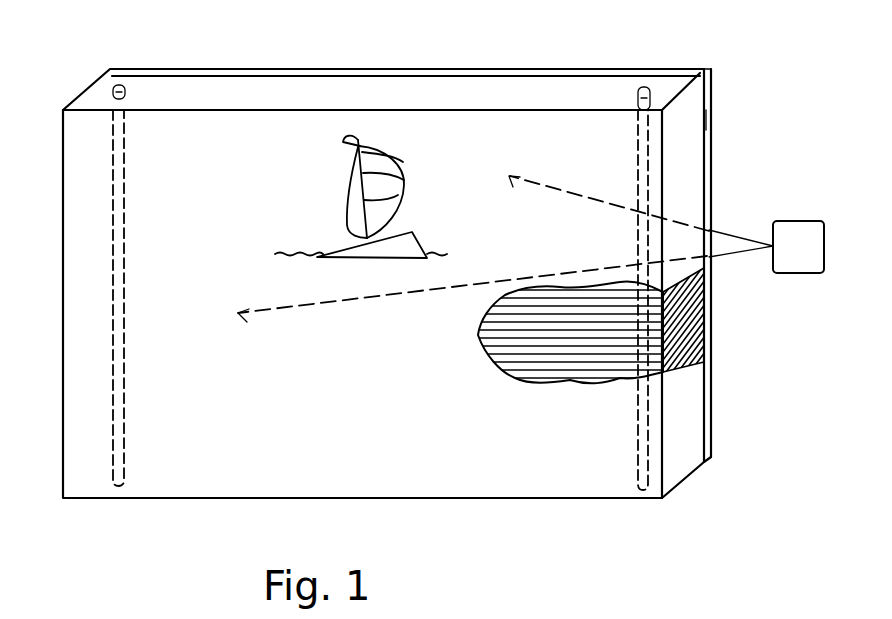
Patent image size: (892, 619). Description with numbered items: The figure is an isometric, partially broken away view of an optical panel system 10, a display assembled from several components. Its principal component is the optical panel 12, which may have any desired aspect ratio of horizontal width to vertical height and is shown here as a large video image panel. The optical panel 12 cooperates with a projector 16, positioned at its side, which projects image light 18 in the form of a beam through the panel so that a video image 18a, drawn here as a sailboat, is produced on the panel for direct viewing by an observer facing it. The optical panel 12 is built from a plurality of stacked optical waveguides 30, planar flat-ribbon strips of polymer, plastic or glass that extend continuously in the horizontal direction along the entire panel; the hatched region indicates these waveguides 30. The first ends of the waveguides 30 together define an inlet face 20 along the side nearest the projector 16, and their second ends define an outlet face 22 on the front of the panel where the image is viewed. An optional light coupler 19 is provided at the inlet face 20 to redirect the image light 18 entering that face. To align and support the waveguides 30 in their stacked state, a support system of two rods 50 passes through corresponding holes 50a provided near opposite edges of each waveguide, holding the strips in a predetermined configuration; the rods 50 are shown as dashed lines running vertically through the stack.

The optical panel system 10 is at (624, 36).
The optical panel 12 is at (705, 433).
The projector 16 is at (808, 258).
The image light 18 is at (736, 238).
The video image 18a is at (348, 203).
The light coupler 19 is at (707, 132).
The inlet face 20 is at (709, 90).
The outlet face 22 is at (620, 157).
The stacked optical waveguides 30 is at (548, 325).
The rods 50 is at (128, 91).
The holes 50a is at (125, 97).